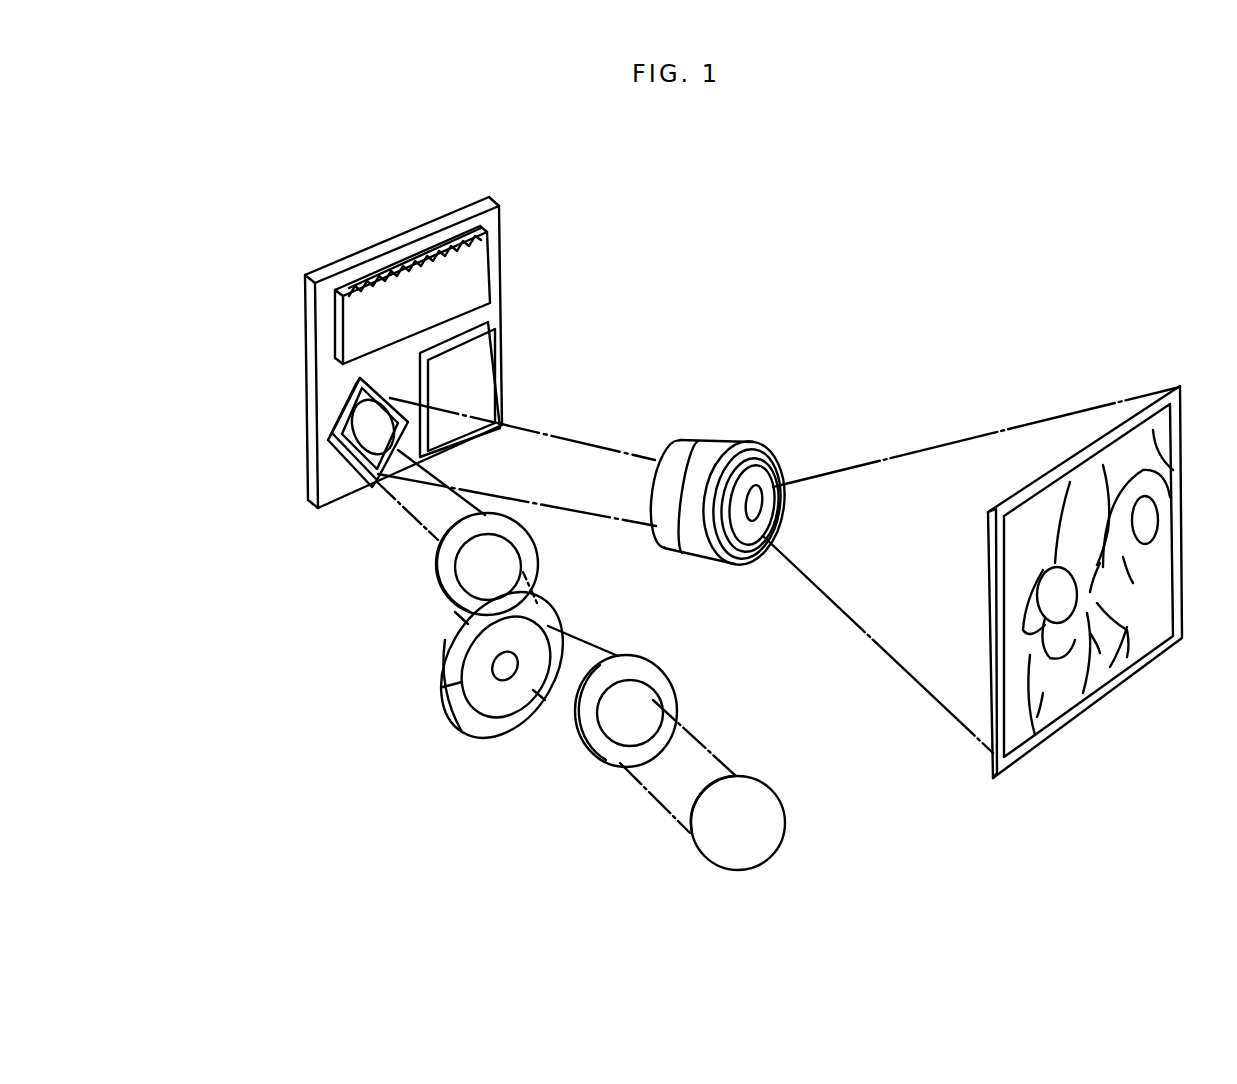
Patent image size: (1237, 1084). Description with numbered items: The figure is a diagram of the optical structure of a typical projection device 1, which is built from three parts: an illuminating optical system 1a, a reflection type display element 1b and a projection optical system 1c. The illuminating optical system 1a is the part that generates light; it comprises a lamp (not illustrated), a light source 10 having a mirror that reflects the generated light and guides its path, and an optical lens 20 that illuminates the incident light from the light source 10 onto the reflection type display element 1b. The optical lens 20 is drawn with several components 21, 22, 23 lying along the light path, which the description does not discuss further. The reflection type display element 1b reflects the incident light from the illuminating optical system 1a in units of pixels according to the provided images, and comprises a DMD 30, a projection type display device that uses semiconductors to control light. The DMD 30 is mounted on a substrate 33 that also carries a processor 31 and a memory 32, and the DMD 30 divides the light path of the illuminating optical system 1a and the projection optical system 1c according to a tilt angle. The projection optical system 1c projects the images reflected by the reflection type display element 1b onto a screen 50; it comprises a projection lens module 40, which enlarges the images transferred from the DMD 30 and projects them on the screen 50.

The projection system 1 is at (990, 250).
The illuminating optical system 1a is at (420, 872).
The reflection type display element 1b is at (267, 262).
The projection optical system 1c is at (826, 415).
The light source 10 is at (714, 855).
The optical lens 20 is at (398, 715).
The condensing lens 21 is at (585, 760).
The color wheel 22 is at (465, 718).
The relay lens 23 is at (447, 602).
The DMD (Digital Micromirror Device) 30 is at (350, 462).
The processor 31 is at (478, 265).
The memory 32 is at (487, 368).
The substrate 33 is at (407, 230).
The projection lens module 40 is at (730, 440).
The screen 50 is at (1091, 703).